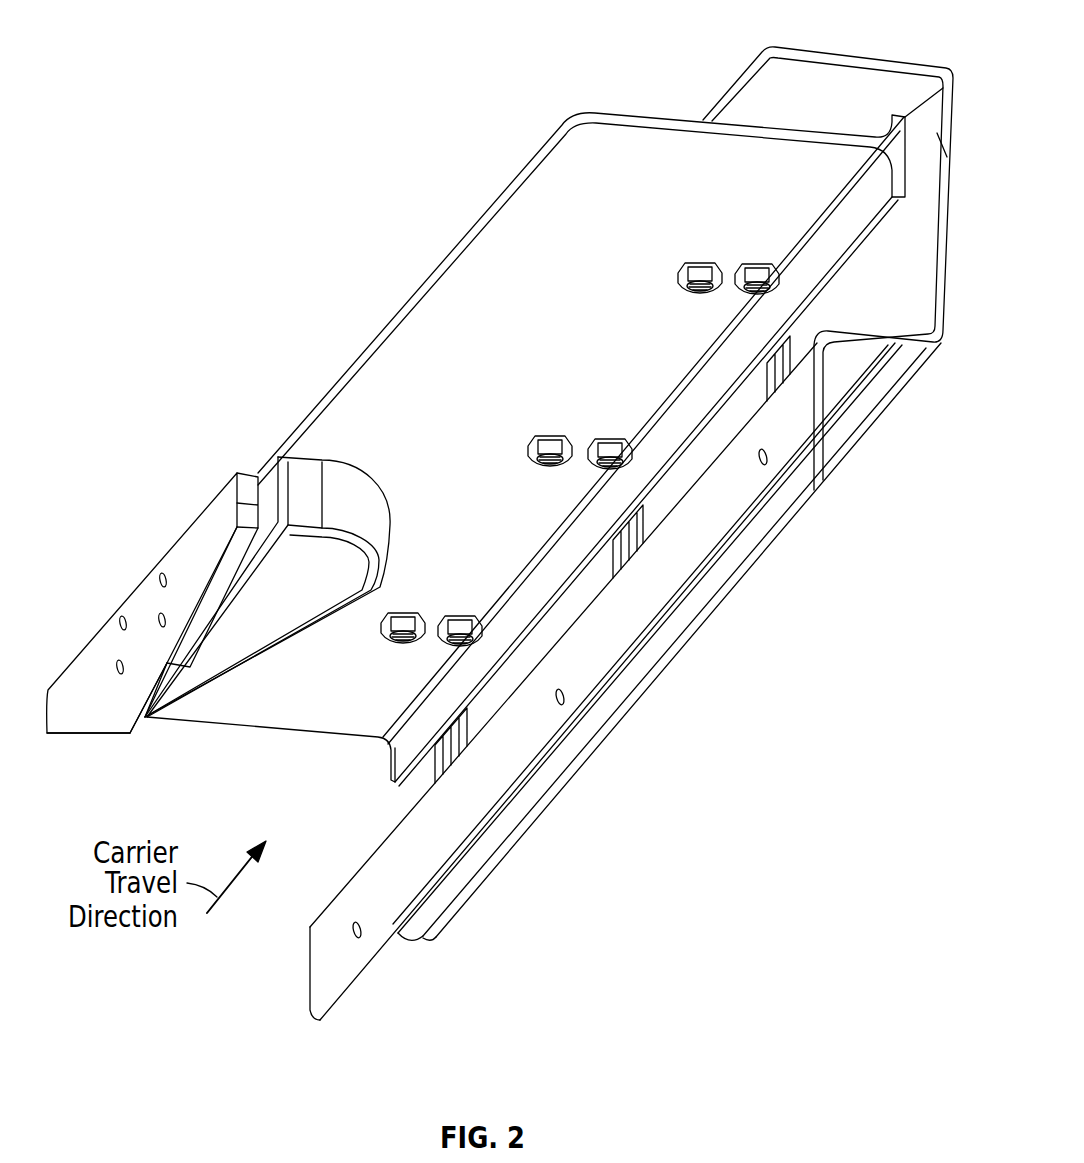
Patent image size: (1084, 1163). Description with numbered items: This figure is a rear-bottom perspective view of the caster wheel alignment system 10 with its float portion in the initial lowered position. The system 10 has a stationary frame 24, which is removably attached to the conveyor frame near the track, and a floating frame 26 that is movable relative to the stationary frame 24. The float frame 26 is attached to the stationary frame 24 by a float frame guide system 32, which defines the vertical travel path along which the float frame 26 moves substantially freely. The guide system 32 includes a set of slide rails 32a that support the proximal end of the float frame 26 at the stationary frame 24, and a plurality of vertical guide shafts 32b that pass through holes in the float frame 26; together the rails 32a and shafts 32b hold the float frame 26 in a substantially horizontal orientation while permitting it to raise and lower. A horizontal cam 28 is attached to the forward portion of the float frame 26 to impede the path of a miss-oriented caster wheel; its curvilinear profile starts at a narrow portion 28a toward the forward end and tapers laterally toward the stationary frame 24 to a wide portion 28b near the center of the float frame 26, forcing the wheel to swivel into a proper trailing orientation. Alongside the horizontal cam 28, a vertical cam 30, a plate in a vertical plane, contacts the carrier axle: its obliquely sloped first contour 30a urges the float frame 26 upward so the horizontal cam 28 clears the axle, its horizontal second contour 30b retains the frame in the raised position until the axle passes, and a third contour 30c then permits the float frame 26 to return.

The caster wheel alignment system 10 is at (361, 77).
The stationary frame 24 is at (748, 78).
The float frame 26 is at (503, 213).
The horizontal cam 28 is at (353, 490).
The narrow portion 28a is at (176, 704).
The wide portion 28b is at (364, 610).
The vertical cam 30 is at (190, 548).
The first contour 30a is at (62, 740).
The second contour 30b is at (133, 722).
The third contour 30c is at (213, 607).
The float frame guide system 32 is at (639, 255).
The slide rails 32a is at (447, 764).
The vertical guide shafts 32b is at (760, 263).